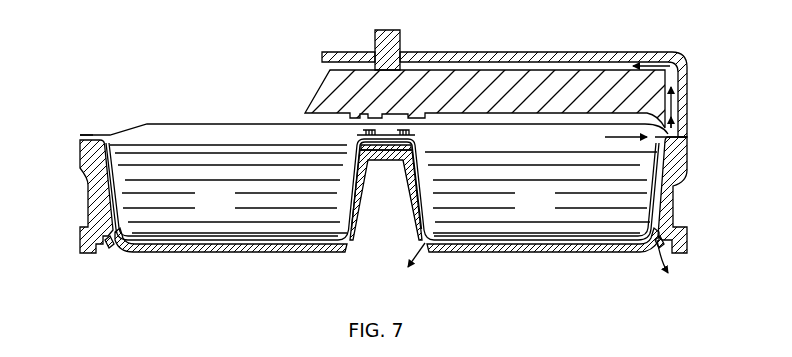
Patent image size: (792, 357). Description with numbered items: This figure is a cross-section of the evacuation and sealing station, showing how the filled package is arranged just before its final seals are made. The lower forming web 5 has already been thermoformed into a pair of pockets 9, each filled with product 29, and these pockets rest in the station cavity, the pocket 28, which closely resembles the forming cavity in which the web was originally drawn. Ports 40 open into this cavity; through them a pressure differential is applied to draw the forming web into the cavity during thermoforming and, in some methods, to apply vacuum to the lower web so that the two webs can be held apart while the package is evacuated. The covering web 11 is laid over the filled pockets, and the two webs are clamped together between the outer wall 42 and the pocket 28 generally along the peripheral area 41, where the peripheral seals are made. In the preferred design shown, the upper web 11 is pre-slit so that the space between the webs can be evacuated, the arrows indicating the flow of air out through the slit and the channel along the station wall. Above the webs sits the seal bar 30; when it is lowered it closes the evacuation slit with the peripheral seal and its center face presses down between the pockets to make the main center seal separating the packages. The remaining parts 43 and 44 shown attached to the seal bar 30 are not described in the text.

The forming web 5 is at (678, 182).
The pocket 9 is at (293, 243).
The covering web 11 is at (217, 123).
The pocket 28 is at (222, 252).
The product 29 is at (228, 207).
The seal bar 30 is at (318, 92).
The port 40 is at (110, 242).
The peripheral seal area 41 is at (93, 135).
The outer wall 42 is at (687, 82).
The post 43 is at (400, 40).
The plate 44 is at (373, 53).